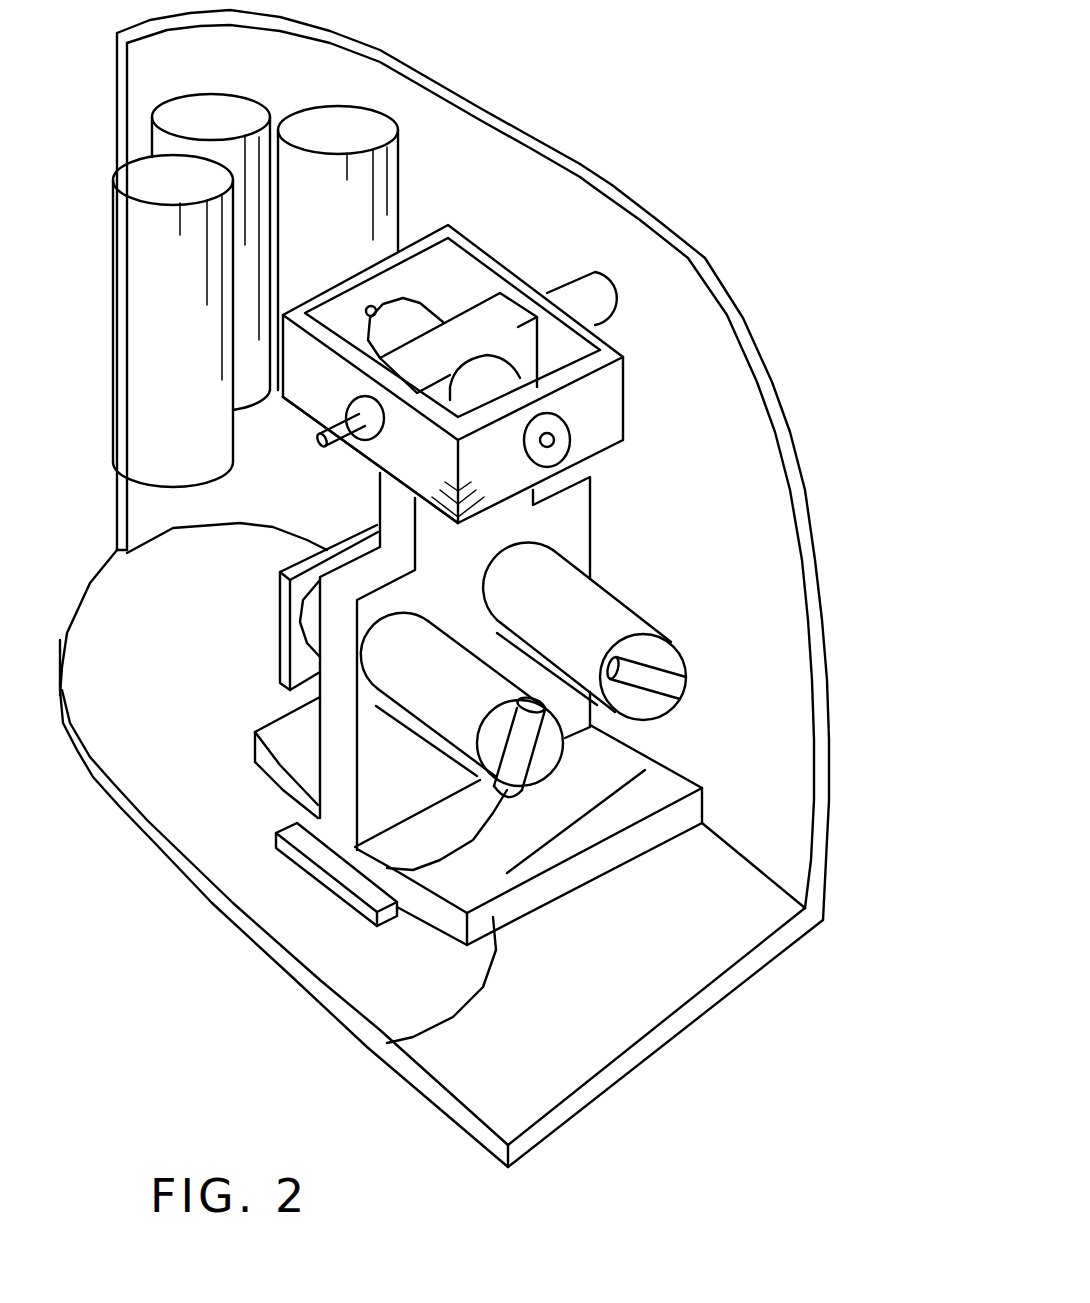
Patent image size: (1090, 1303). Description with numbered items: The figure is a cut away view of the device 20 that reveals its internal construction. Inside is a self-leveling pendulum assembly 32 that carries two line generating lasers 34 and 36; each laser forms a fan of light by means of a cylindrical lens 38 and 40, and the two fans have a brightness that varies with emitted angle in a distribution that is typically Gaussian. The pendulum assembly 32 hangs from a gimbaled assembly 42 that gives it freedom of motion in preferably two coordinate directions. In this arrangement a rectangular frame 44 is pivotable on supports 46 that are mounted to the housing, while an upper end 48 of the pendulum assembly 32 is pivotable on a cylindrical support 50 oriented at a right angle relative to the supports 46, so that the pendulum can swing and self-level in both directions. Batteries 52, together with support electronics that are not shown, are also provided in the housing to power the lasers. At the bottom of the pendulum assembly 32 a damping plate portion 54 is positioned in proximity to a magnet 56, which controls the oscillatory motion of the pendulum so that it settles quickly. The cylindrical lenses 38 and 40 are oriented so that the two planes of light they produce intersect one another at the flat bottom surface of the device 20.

The device 20 is at (628, 77).
The self-leveling pendulum assembly 32 is at (630, 515).
The line generating laser 34 is at (504, 660).
The line generating laser 36 is at (710, 635).
The cylindrical lens 38 is at (400, 868).
The cylindrical lens 40 is at (673, 686).
The gimbaled assembly 42 is at (542, 235).
The rectangular frame 44 is at (600, 403).
The supports 46 is at (605, 291).
The upper end 48 is at (413, 357).
The cylindrical support 50 is at (385, 462).
The batteries 52 is at (204, 290).
The damping plate portion 54 is at (367, 1043).
The magnet 56 is at (333, 922).